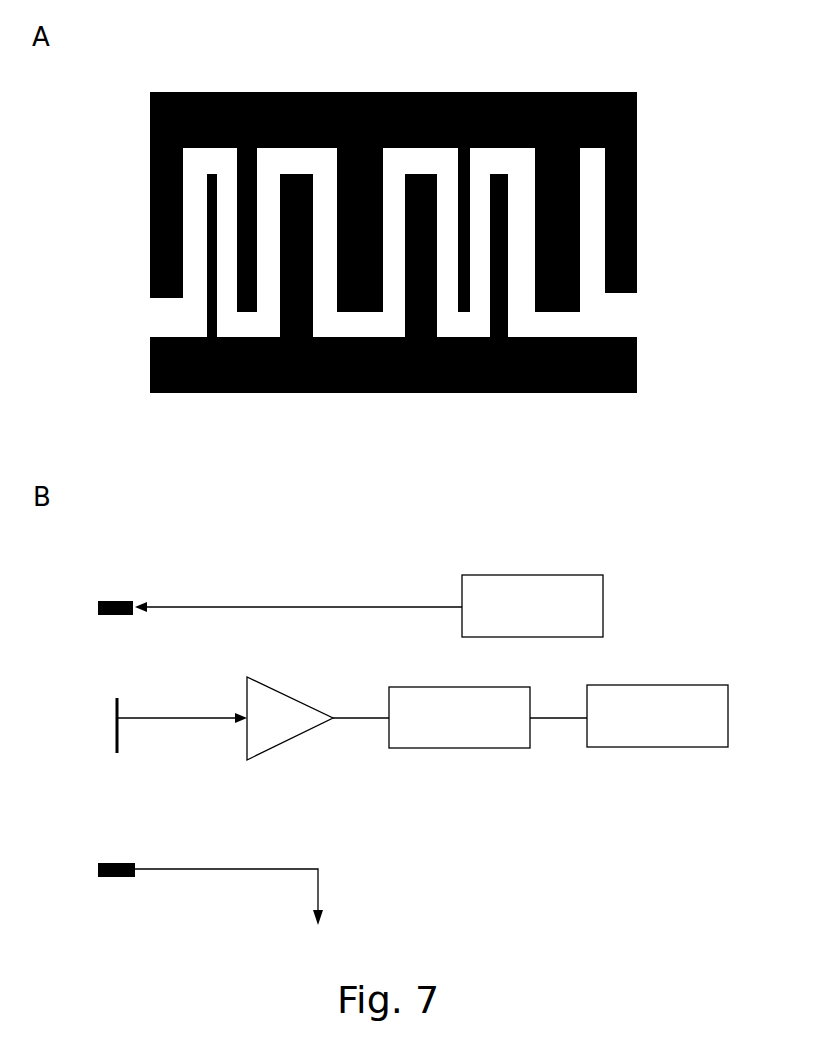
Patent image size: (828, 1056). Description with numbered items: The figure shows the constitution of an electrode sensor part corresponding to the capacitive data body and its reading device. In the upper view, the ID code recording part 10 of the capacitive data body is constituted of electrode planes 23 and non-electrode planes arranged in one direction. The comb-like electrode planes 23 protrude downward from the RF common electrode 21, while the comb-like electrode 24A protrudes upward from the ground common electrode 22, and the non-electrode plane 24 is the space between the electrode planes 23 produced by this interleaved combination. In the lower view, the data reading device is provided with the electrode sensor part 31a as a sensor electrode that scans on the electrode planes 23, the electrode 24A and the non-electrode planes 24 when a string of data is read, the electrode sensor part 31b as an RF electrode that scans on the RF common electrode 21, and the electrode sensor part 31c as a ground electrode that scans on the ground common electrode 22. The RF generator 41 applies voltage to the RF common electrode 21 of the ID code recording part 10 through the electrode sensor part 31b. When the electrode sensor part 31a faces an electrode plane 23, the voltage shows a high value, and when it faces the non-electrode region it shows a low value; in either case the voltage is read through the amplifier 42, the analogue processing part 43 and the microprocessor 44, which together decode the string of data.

The ID code recording part 10 is at (439, 215).
The RF common electrode 21 is at (602, 92).
The ground common electrode 22 is at (638, 367).
The electrode planes 23 is at (638, 210).
The non-electrode plane 24 is at (592, 283).
The comb-like electrode 24A is at (508, 318).
The electrode sensor part 31a is at (115, 705).
The electrode sensor part 31b is at (97, 608).
The electrode sensor part 31c is at (98, 869).
The RF generator 41 is at (572, 575).
The amplifier 42 is at (293, 693).
The analogue processing part 43 is at (423, 687).
The microprocessor 44 is at (700, 685).